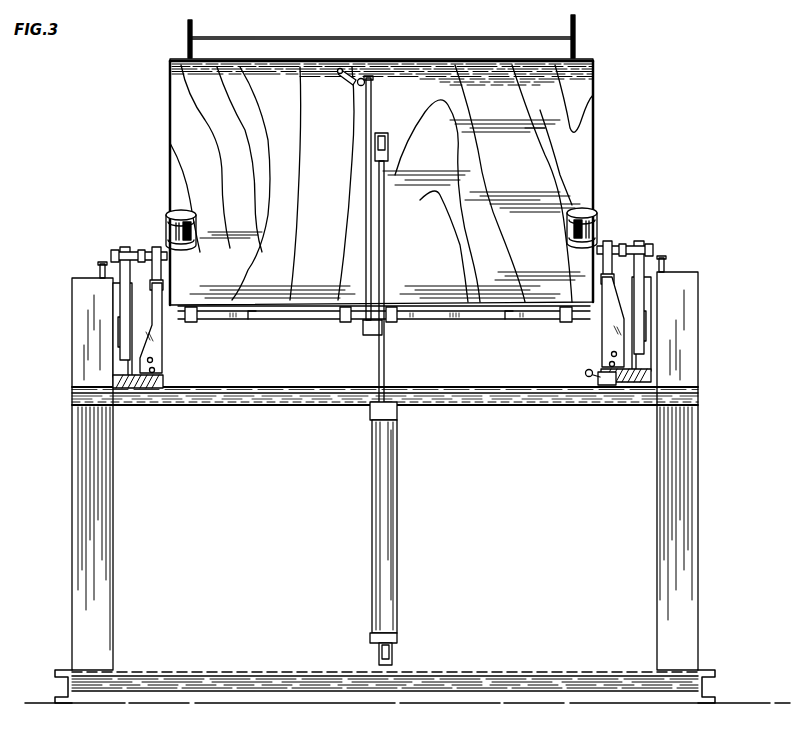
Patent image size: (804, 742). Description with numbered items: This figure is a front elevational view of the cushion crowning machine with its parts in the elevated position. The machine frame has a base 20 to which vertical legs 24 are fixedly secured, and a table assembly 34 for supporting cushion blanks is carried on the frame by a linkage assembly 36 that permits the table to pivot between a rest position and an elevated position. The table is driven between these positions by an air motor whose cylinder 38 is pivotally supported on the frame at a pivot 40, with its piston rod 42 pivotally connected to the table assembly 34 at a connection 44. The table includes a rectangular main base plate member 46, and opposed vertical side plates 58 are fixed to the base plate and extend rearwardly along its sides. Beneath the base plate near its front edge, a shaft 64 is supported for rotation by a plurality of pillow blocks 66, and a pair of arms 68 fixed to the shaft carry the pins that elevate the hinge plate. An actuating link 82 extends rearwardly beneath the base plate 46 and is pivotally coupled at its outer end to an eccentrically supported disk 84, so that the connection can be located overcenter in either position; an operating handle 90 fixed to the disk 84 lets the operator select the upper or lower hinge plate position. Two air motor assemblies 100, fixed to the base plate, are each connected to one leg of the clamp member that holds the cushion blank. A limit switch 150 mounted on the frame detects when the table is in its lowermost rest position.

The base 20 is at (55, 688).
The vertical leg 24 is at (103, 551).
The table assembly 34 is at (575, 150).
The linkage assembly 36 is at (118, 238).
The cylinder 38 is at (388, 553).
The pivotal support 40 is at (392, 656).
The piston rod 42 is at (385, 245).
The pivotal connection 44 is at (389, 143).
The main base plate member 46 is at (499, 158).
The vertical side plate 58 is at (188, 33).
The shaft 64 is at (300, 320).
The pillow block 66 is at (191, 322).
The arm 68 is at (251, 320).
The actuating link 82 is at (366, 201).
The disk 84 is at (362, 90).
The operating handle 90 is at (344, 84).
The air motor assembly 100 is at (194, 224).
The limit switch 150 is at (614, 390).